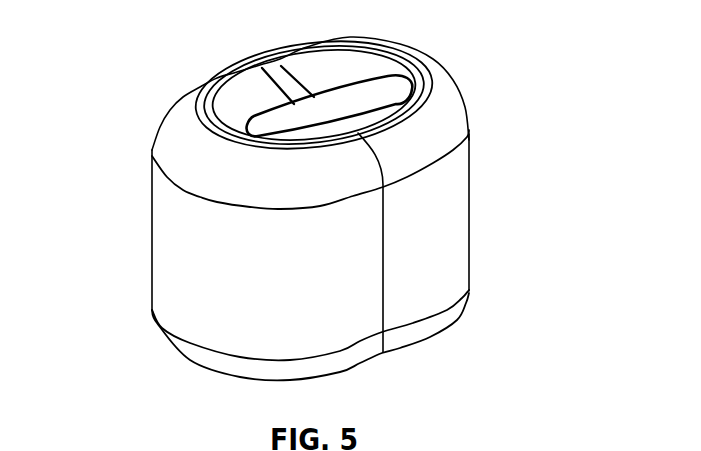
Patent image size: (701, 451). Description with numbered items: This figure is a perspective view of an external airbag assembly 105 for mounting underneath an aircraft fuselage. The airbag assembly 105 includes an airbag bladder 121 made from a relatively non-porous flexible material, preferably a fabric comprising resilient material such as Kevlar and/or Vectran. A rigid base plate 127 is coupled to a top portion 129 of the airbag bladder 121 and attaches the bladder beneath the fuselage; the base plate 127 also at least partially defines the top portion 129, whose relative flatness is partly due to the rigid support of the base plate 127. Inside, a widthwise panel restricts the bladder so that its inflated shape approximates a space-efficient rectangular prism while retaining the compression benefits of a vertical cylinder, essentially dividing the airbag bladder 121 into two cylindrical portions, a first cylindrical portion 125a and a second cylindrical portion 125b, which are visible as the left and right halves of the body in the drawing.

The airbag assembly 105 is at (151, 362).
The airbag bladder 121 is at (470, 213).
The first cylindrical portion 125a is at (152, 230).
The second cylindrical portion 125b is at (470, 167).
The base plate 127 is at (266, 114).
The top portion 129 is at (340, 68).